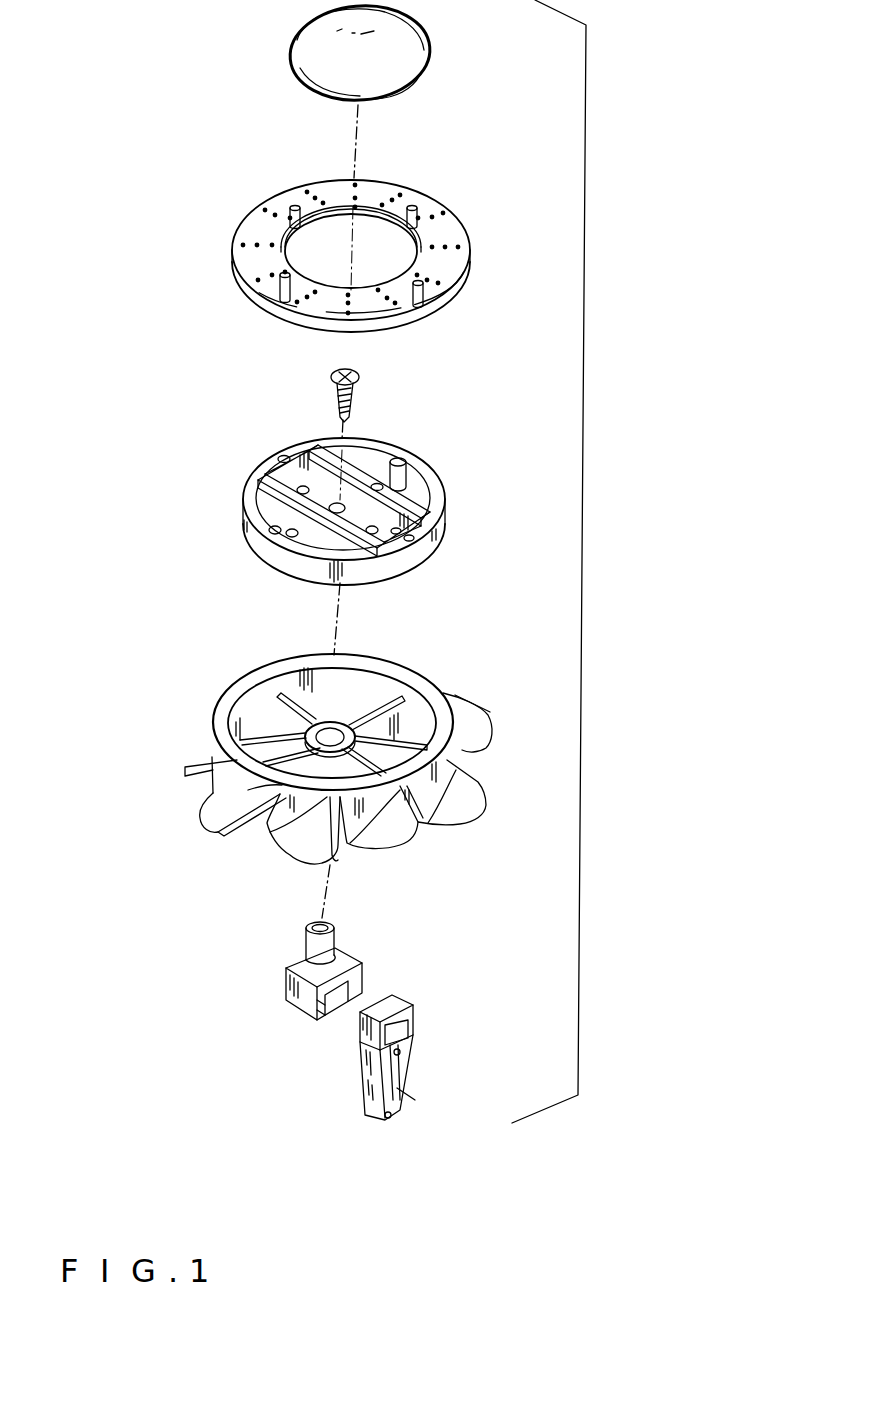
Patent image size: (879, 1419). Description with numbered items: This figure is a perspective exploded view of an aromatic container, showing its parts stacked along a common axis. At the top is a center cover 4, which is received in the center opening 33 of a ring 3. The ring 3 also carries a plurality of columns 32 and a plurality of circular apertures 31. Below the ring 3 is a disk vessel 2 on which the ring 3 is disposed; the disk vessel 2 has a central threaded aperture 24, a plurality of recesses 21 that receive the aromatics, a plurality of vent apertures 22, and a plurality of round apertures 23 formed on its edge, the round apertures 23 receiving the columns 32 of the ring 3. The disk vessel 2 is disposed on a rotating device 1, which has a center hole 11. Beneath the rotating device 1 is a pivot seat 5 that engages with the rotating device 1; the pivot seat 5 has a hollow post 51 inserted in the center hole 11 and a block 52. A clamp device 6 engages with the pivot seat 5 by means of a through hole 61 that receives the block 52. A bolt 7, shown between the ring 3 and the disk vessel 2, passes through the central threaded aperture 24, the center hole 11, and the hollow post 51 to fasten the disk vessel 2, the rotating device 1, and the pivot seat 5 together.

The rotating device 1 is at (328, 748).
The center hole 11 is at (360, 730).
The disk vessel 2 is at (363, 533).
The recesses 21 is at (388, 530).
The vent apertures 22 is at (290, 532).
The round apertures 23 is at (413, 537).
The central threaded aperture 24 is at (330, 517).
The ring 3 is at (383, 229).
The circular apertures 31 is at (462, 248).
The columns 32 is at (288, 210).
The center opening 33 is at (378, 232).
The center cover 4 is at (430, 59).
The pivot seat 5 is at (357, 990).
The hollow post 51 is at (337, 936).
The block 52 is at (305, 1012).
The clamp device 6 is at (412, 1072).
The through hole 61 is at (417, 1030).
The bolt 7 is at (362, 377).